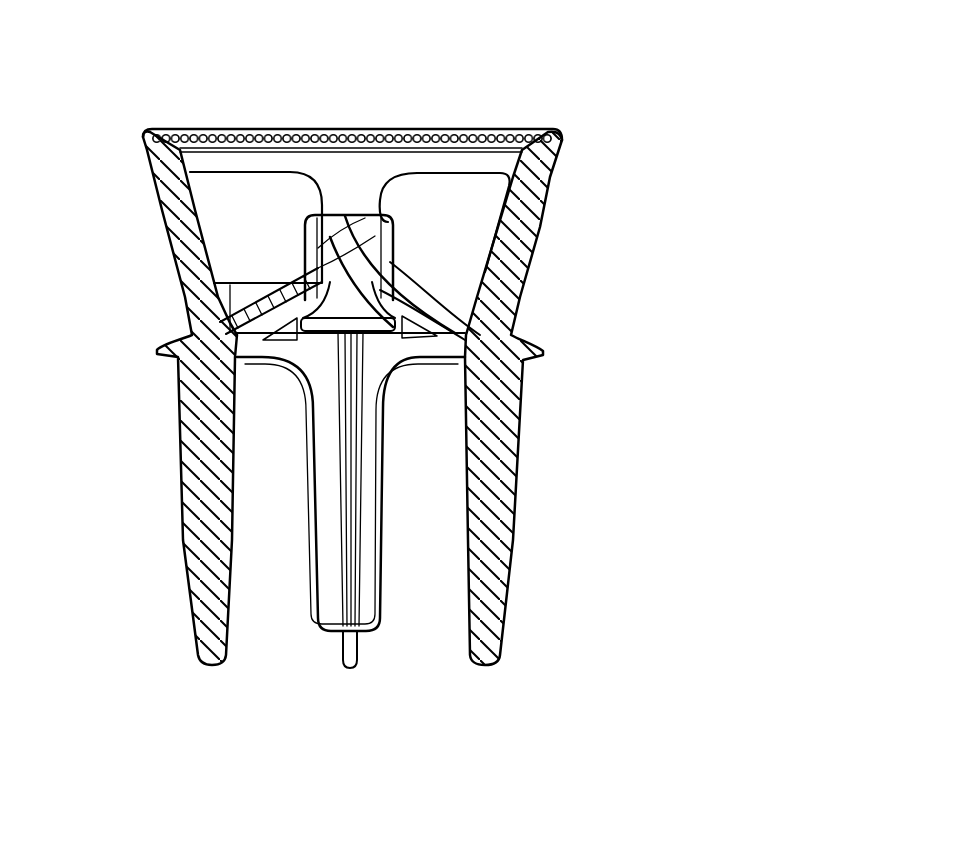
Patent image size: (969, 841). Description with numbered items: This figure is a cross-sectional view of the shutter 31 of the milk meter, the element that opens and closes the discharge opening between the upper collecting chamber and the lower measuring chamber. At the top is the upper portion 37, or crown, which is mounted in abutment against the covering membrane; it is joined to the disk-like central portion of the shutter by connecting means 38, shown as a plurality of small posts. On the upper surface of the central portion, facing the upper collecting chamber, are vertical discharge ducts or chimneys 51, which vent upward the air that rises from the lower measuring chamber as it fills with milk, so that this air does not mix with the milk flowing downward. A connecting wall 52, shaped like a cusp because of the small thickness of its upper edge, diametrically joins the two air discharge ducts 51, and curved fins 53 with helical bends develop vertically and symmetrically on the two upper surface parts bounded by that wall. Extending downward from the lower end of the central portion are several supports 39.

The shutter 31 is at (620, 78).
The upper portion 37 is at (197, 128).
The connecting means 38 is at (346, 180).
The support 39 is at (183, 510).
The vertical discharge duct 51 is at (385, 250).
The connecting wall 52 is at (386, 222).
The curved fin 53 is at (266, 283).